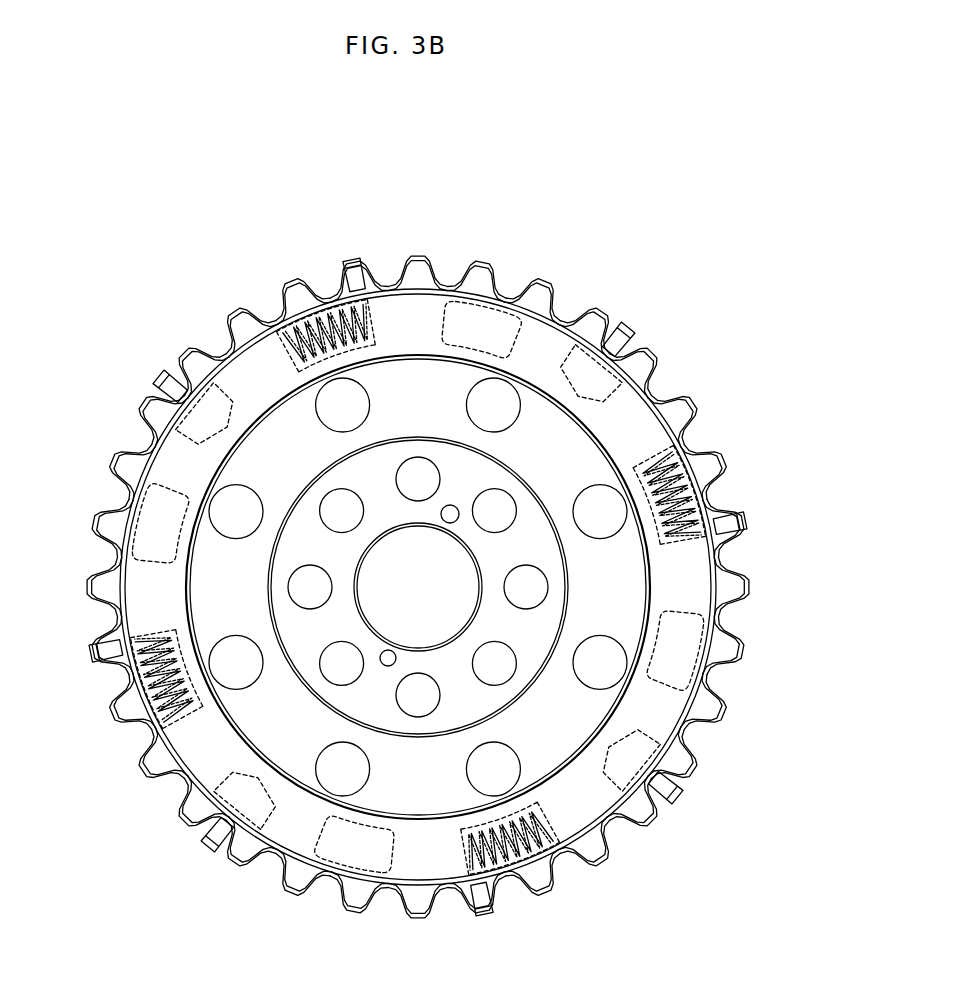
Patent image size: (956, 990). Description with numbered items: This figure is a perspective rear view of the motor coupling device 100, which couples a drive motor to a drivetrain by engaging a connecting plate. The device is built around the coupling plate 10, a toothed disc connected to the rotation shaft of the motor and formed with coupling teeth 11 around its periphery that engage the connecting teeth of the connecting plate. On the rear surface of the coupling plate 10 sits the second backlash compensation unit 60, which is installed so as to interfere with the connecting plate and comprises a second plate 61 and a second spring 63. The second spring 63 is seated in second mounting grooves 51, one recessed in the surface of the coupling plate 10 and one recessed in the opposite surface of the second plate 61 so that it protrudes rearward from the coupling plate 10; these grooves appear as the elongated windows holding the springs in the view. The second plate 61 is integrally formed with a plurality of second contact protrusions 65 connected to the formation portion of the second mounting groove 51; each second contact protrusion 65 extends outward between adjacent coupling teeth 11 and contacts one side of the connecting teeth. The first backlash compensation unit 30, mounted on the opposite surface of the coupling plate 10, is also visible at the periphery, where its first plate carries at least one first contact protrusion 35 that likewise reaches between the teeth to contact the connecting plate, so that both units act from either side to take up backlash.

The motor coupling device 100 is at (400, 182).
The coupling plate 10 is at (222, 585).
The coupling teeth 11 is at (95, 517).
The first backlash compensation unit 30 is at (140, 399).
The first contact protrusion 35 is at (152, 390).
The second mounting groove 51 is at (248, 302).
The second backlash compensation unit 60 is at (400, 303).
The second plate 61 is at (552, 370).
The second spring 63 is at (305, 300).
The second contact protrusion 65 is at (343, 264).